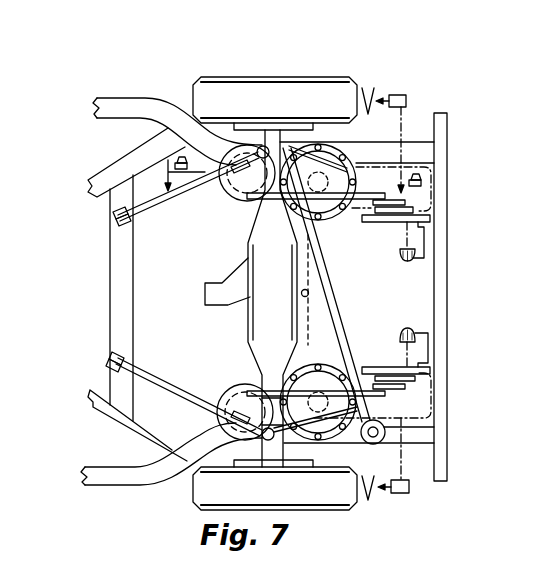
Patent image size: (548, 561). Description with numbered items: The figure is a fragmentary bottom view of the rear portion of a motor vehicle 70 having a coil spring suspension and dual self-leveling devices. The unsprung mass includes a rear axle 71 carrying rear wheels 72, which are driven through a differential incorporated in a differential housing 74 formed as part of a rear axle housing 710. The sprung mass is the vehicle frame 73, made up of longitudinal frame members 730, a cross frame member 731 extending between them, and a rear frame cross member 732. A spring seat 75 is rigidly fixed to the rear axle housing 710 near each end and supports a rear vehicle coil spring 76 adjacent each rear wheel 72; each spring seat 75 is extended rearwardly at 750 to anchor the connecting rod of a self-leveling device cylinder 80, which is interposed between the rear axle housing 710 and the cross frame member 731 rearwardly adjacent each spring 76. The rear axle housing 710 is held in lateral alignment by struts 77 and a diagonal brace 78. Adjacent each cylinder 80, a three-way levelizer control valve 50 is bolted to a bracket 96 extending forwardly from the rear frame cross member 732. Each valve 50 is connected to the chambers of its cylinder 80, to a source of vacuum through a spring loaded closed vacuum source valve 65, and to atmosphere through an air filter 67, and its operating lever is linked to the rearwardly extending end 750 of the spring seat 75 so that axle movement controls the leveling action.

The motor vehicle 70 is at (346, 75).
The rear wheels 72 is at (284, 84).
The rear vehicle coil spring 76 is at (236, 150).
The vehicle frame 73 is at (114, 120).
The longitudinal frame members 730 is at (148, 98).
The rear frame cross member 732 is at (441, 312).
The spring seat 75 is at (223, 195).
The struts 77 is at (174, 192).
The differential housing 74 is at (304, 281).
The rear axle housing 710 is at (264, 212).
The rear axle 71 is at (260, 371).
The self-leveling device cylinder 80 is at (357, 159).
The rearwardly extending end of spring seat 750 is at (326, 167).
The cross frame member 731 is at (328, 323).
The diagonal brace 78 is at (345, 320).
The bracket 96 is at (380, 222).
The three-way levelizer control valve 50 is at (421, 204).
The air filter 67 is at (417, 258).
The vacuum source valve 65 is at (407, 95).